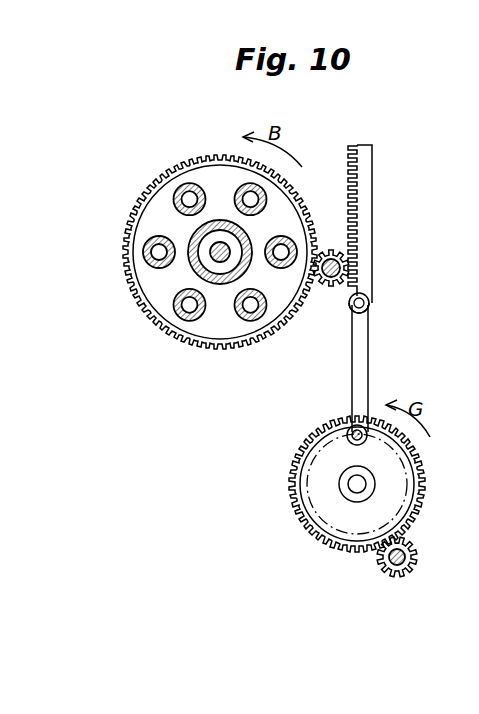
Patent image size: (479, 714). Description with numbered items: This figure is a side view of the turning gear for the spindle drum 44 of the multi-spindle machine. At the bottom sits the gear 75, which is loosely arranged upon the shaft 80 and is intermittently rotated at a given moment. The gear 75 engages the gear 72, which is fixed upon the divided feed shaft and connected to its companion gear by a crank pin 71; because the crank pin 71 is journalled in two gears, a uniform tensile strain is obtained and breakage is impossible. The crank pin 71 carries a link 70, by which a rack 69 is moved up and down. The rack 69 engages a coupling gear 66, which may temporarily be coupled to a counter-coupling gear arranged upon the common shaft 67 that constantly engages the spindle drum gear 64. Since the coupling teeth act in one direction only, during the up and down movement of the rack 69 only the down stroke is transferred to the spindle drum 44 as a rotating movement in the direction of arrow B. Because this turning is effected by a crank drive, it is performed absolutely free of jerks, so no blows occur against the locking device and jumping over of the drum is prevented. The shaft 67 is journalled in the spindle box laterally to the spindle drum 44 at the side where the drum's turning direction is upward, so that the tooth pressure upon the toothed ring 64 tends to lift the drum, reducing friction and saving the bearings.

The spindle drum 44 is at (202, 268).
The spindle drum gear 64 is at (205, 347).
The coupling gear 66 is at (329, 271).
The shaft 67 is at (331, 257).
The rack 69 is at (375, 183).
The link 70 is at (369, 350).
The crank pin 71 is at (346, 429).
The gear 72 is at (332, 474).
The gear 75 is at (413, 573).
The shaft 80 is at (388, 570).